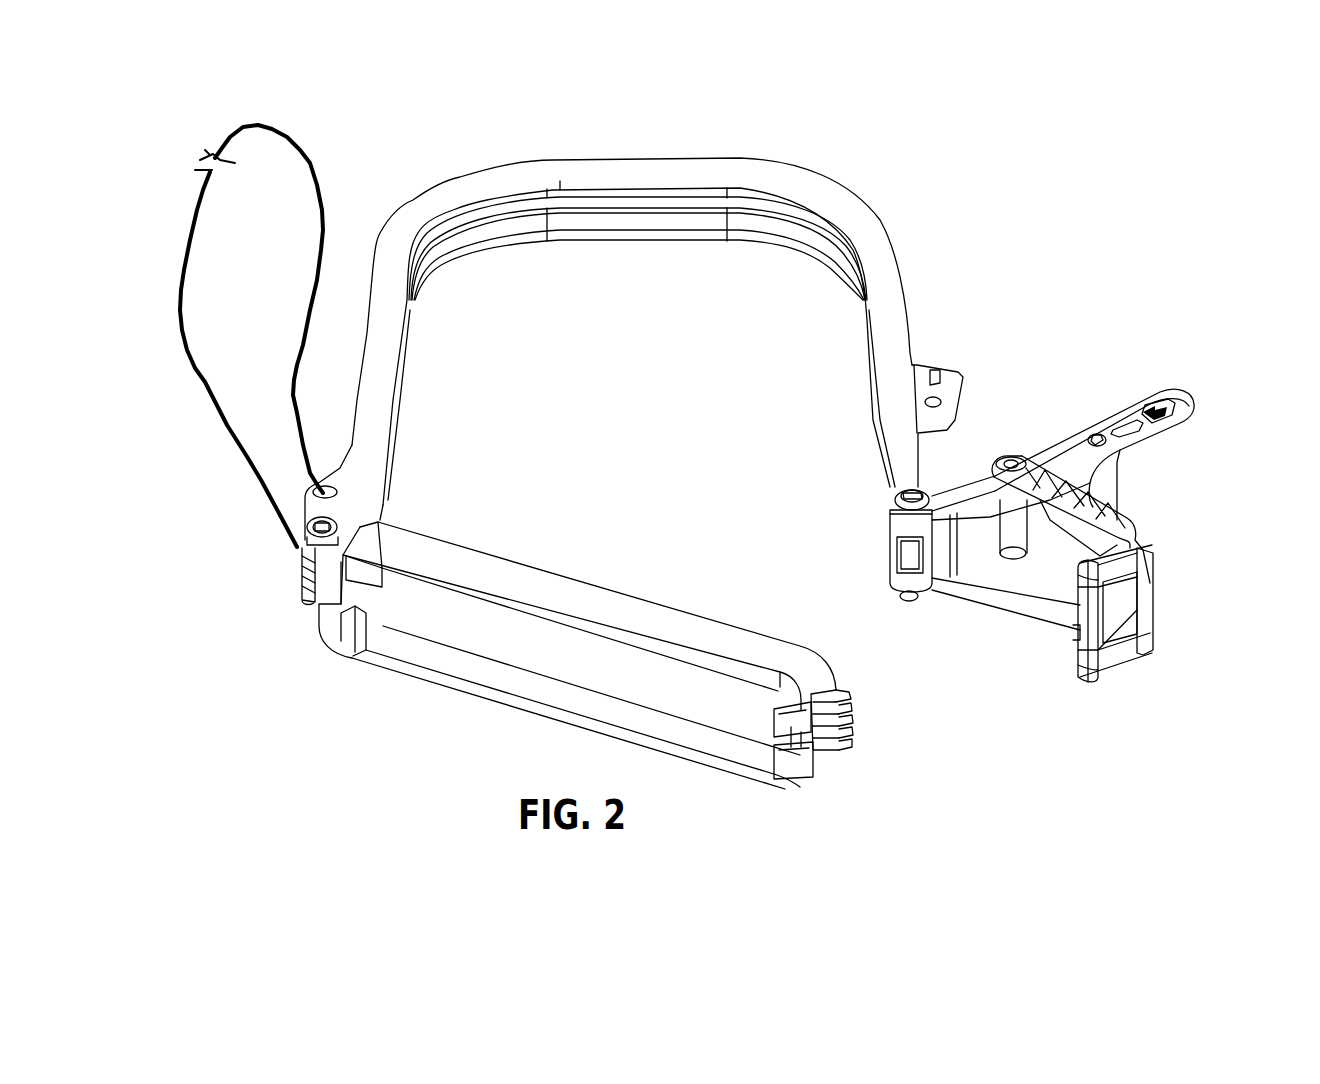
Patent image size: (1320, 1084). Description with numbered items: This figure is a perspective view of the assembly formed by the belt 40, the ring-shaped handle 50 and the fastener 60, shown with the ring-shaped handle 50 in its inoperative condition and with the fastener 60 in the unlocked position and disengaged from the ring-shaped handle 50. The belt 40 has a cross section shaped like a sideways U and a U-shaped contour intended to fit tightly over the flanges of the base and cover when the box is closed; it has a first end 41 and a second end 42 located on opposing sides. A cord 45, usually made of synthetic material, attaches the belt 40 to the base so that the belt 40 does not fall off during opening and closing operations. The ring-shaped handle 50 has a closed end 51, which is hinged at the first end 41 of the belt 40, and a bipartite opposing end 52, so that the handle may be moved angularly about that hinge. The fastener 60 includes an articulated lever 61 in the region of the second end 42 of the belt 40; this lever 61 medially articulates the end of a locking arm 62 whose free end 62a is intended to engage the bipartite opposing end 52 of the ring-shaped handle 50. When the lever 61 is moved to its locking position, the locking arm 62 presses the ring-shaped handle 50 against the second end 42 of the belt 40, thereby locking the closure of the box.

The belt 40 is at (563, 176).
The first end 41 is at (297, 546).
The second end 42 is at (875, 476).
The cord 45 is at (300, 133).
The ring-shaped handle 50 is at (502, 568).
The closed end 51 is at (318, 627).
The bipartite opposing end 52 is at (815, 788).
The fastener 60 is at (1130, 467).
The articulated lever 61 is at (966, 468).
The locking arm 62 is at (1117, 503).
The free end 62a is at (1087, 638).